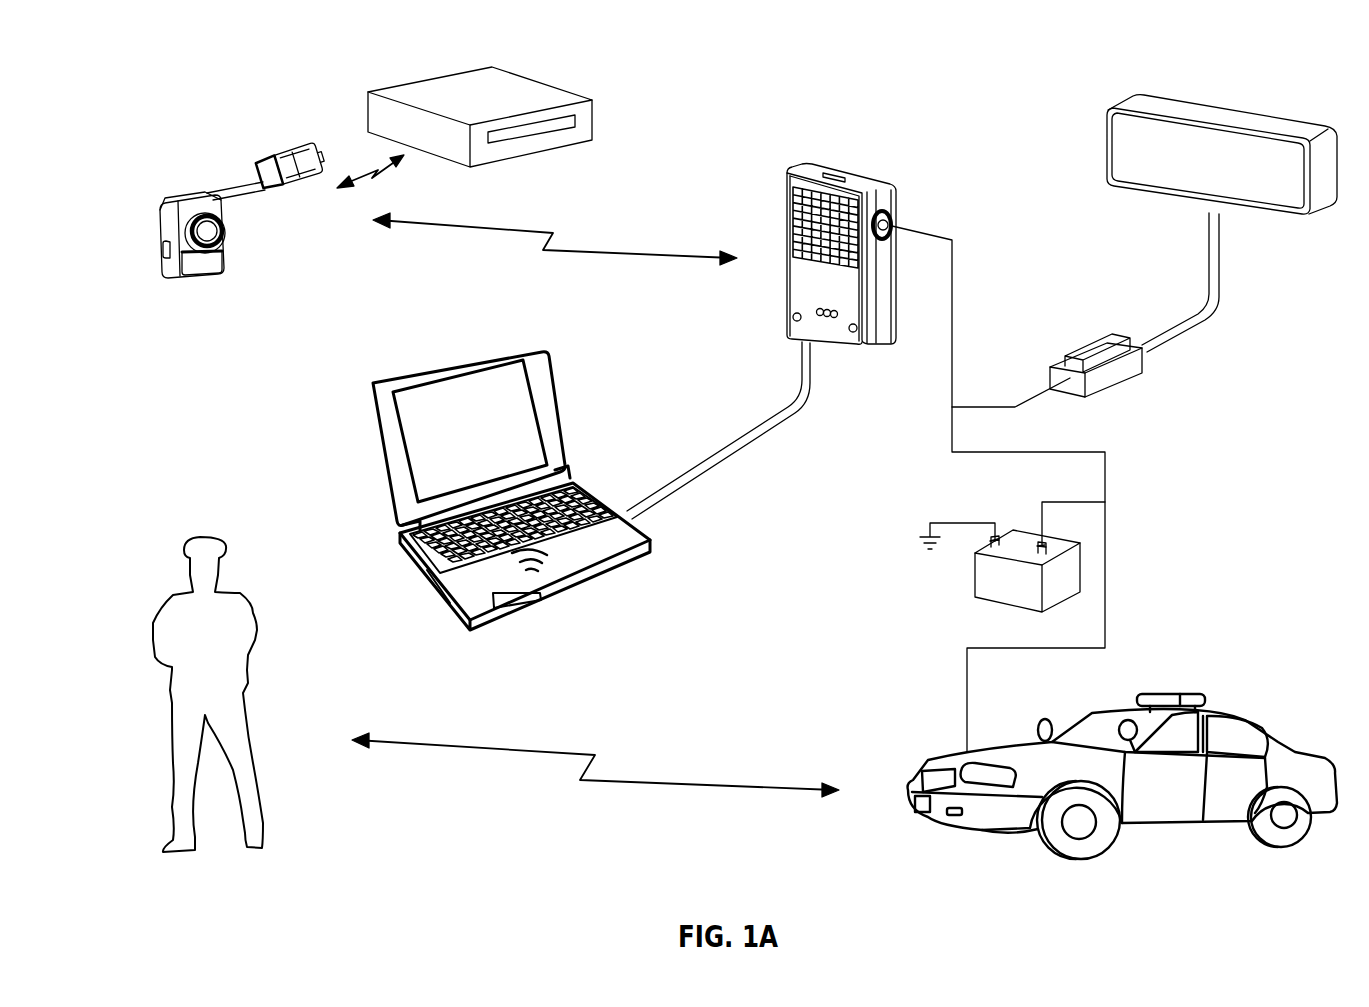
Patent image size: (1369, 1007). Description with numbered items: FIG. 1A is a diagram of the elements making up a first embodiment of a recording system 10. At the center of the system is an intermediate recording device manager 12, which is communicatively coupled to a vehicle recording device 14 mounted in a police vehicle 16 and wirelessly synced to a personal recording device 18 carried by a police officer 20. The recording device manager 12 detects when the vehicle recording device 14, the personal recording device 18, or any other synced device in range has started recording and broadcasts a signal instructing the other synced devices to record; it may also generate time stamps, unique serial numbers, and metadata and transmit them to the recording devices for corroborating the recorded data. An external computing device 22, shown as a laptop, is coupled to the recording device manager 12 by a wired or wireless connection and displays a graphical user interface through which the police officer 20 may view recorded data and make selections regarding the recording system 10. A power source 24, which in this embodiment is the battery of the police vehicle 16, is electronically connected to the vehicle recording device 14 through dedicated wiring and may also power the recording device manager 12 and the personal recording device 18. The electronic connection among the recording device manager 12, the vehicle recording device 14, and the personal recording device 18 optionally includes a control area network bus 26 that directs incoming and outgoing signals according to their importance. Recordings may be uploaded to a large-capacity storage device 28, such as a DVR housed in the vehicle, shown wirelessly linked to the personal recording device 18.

The recording system 10 is at (766, 58).
The intermediate recording device manager 12 is at (878, 160).
The vehicle recording device 14 is at (1239, 110).
The police vehicle 16 is at (1250, 714).
The personal recording device 18 is at (186, 198).
The police officer 20 is at (225, 589).
The external computing device 22 is at (388, 458).
The power source 24 is at (972, 573).
The control area network (CAN) bus 26 is at (1090, 344).
The large-capacity storage device 28 is at (378, 120).